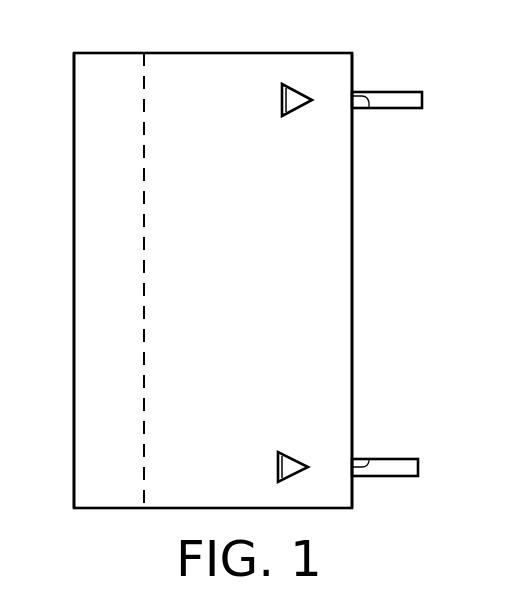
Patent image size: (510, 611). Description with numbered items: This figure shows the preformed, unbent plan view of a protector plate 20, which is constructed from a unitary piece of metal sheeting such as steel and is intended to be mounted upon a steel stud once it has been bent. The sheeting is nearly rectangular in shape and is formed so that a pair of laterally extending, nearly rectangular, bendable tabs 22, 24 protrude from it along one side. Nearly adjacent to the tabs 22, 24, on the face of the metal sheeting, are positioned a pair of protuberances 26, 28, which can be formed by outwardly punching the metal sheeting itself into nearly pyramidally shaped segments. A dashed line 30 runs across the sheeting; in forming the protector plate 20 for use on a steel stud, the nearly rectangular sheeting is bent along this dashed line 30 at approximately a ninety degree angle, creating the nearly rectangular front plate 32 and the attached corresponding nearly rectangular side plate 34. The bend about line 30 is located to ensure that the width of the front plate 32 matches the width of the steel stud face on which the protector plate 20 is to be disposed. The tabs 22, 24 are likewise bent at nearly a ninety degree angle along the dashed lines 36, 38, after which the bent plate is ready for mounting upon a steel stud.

The protector plate 20 is at (230, 44).
The bendable tab 22 is at (412, 100).
The bendable tab 24 is at (408, 468).
The protuberance 26 is at (285, 101).
The protuberance 28 is at (278, 467).
The dashed line 30 is at (145, 321).
The front plate 32 is at (313, 293).
The side plate 34 is at (97, 366).
The dashed line 36 is at (369, 108).
The dashed line 38 is at (369, 459).